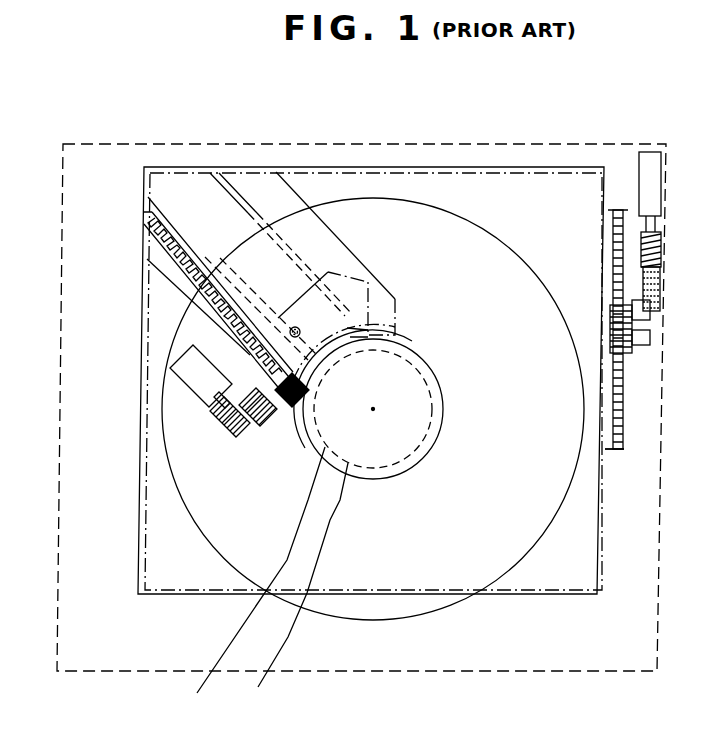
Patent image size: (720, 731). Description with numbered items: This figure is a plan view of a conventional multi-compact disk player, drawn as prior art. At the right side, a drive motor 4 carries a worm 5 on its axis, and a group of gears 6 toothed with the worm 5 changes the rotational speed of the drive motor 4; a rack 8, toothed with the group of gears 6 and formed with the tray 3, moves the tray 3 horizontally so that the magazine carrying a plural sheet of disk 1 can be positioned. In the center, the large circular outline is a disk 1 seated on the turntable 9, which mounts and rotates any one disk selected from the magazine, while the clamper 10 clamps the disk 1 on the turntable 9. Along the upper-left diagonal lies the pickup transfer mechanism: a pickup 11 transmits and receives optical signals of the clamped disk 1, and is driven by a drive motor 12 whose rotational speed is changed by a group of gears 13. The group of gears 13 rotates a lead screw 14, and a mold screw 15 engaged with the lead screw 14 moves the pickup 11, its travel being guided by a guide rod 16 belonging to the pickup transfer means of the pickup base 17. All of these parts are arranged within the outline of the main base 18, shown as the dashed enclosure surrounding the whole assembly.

The disk 1 is at (400, 217).
The tray 3 is at (620, 433).
The drive motor 4 is at (648, 150).
The worm 5 is at (655, 233).
The group of gears 6 is at (660, 287).
The rack 8 is at (618, 378).
The turntable 9 is at (250, 579).
The clamper 10 is at (337, 518).
The pickup 11 is at (312, 310).
The drive motor 12 is at (192, 370).
The group of gears 13 is at (232, 436).
The lead screw 14 is at (160, 248).
The mold screw 15 is at (250, 350).
The guide rod 16 is at (222, 178).
The pickup base 17 is at (497, 167).
The main base 18 is at (617, 673).